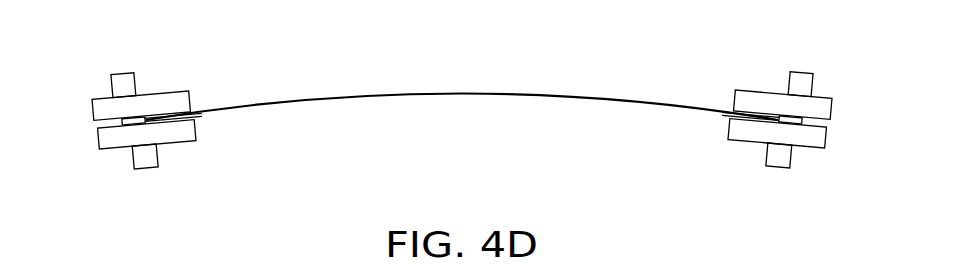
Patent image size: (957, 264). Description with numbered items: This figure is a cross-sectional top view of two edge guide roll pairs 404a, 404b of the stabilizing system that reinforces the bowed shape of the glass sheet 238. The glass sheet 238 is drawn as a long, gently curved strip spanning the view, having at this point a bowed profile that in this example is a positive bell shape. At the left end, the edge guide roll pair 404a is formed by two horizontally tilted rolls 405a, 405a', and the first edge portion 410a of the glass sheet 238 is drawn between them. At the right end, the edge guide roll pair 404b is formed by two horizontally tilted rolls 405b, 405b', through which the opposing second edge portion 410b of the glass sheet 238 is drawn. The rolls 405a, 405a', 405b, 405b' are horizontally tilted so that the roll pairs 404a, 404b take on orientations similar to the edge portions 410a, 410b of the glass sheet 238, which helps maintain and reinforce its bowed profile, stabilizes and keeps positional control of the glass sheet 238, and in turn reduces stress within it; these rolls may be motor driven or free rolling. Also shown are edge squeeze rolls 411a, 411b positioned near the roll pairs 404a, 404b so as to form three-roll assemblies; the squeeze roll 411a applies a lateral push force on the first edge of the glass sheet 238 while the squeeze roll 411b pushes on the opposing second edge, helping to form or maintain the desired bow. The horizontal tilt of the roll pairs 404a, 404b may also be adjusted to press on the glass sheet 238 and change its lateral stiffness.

The glass sheet 238 is at (462, 93).
The edge guide roll pair 404a is at (143, 101).
The edge guide roll pair 404b is at (781, 102).
The horizontally tilted roll 405a is at (164, 149).
The horizontally tilted roll 405a' is at (162, 88).
The horizontally tilted roll 405b is at (760, 148).
The horizontally tilted roll 405b' is at (759, 88).
The first edge portion 410a is at (201, 111).
The second edge portion 410b is at (723, 111).
The edge squeeze roll 411a is at (127, 70).
The edge squeeze roll 411b is at (798, 70).